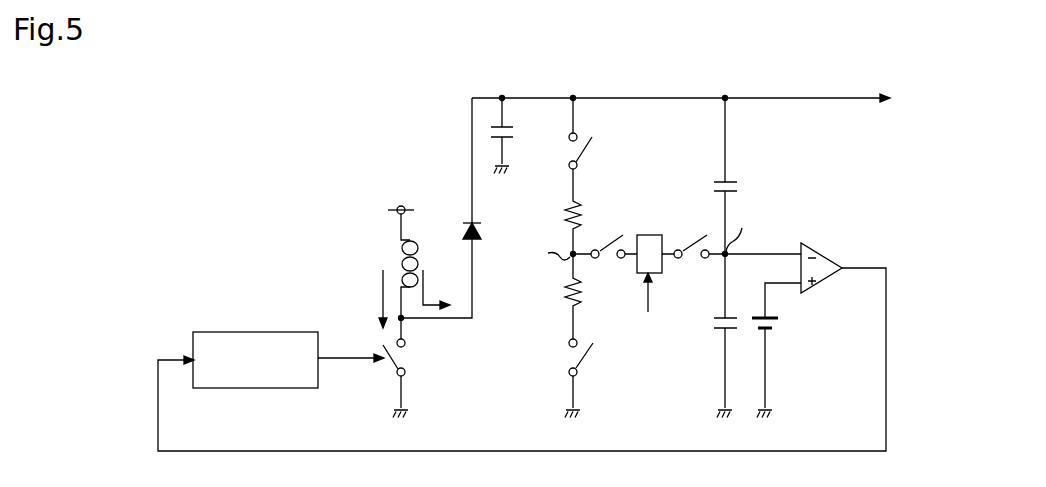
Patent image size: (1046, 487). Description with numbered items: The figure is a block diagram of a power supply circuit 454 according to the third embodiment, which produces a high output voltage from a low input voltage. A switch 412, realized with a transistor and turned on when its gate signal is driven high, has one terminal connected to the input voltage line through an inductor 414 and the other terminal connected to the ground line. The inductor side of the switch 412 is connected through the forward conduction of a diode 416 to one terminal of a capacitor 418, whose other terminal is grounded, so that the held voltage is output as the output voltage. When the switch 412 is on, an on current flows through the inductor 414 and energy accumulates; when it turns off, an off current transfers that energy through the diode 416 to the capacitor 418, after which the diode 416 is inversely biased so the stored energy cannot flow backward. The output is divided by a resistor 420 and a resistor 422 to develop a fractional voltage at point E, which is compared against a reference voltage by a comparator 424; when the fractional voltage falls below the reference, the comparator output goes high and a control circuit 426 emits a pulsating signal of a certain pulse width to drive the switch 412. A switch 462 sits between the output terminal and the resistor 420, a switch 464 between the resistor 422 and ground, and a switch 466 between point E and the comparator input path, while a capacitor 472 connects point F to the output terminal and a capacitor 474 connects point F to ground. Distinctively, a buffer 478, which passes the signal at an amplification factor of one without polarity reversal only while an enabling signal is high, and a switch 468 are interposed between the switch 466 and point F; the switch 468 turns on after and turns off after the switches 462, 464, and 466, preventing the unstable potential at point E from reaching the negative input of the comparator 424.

The power supply circuit 454 is at (229, 97).
The switch 412 is at (409, 360).
The inductor 414 is at (395, 252).
The diode 416 is at (482, 236).
The capacitor 418 is at (513, 139).
The resistor 420 is at (565, 210).
The resistor 422 is at (565, 285).
The comparator 424 is at (839, 264).
The control circuit 426 is at (248, 331).
The switch 462 is at (566, 152).
The switch 464 is at (566, 356).
The switch 466 is at (608, 264).
The switch 468 is at (691, 264).
The capacitor 472 is at (714, 184).
The capacitor 474 is at (718, 333).
The buffer 478 is at (645, 235).